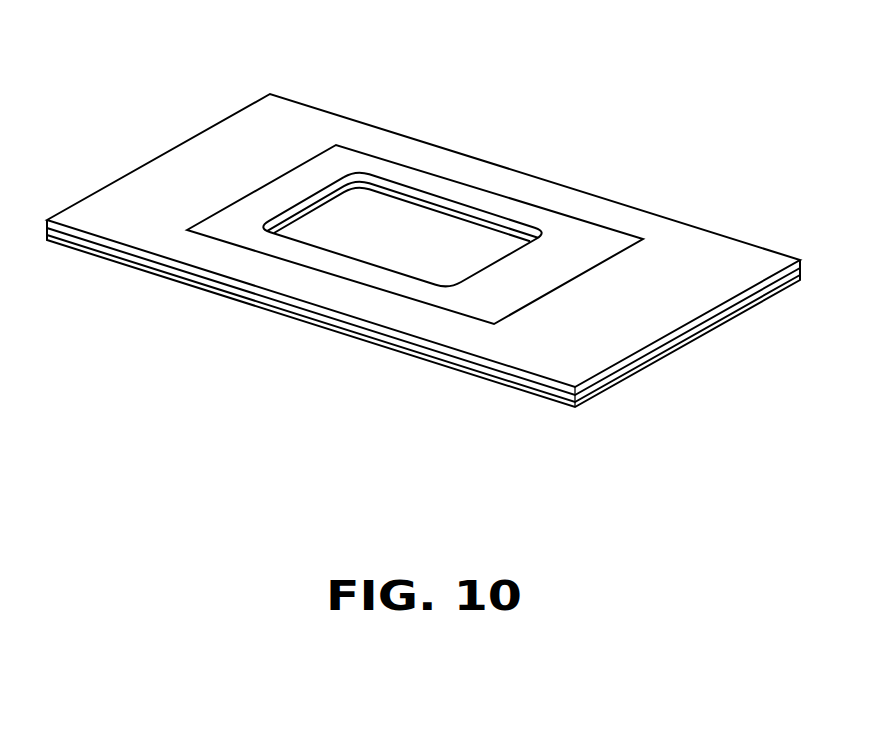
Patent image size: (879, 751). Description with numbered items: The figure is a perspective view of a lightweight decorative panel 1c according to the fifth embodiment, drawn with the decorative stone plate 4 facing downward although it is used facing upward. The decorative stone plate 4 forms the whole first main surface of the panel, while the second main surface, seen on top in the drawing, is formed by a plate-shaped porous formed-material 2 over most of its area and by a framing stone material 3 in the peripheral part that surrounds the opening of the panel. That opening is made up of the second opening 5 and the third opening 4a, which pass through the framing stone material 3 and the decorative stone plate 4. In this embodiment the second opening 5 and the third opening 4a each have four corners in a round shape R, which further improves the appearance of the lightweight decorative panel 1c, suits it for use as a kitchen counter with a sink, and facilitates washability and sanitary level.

The lightweight decorative panel 1c is at (586, 139).
The porous formed-material 2 is at (703, 257).
The framing stone material 3 is at (597, 238).
The decorative stone plate 4 is at (684, 347).
The third opening 4a is at (381, 196).
The second opening 5 is at (415, 196).
The round shape R is at (350, 170).